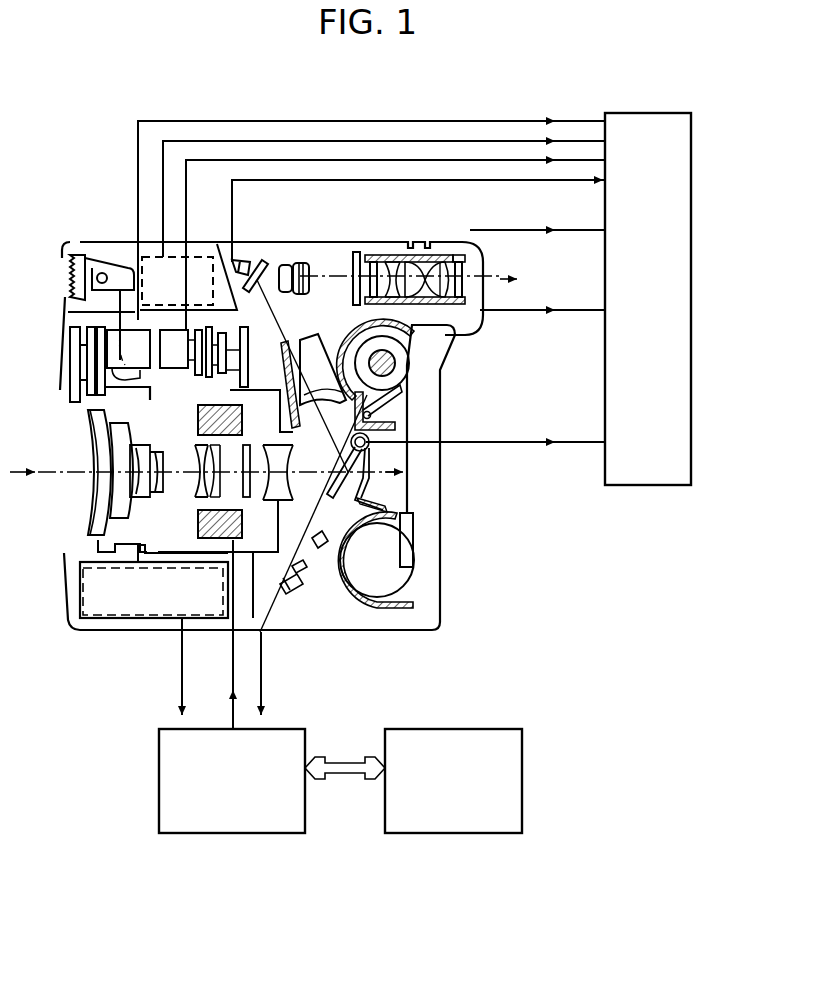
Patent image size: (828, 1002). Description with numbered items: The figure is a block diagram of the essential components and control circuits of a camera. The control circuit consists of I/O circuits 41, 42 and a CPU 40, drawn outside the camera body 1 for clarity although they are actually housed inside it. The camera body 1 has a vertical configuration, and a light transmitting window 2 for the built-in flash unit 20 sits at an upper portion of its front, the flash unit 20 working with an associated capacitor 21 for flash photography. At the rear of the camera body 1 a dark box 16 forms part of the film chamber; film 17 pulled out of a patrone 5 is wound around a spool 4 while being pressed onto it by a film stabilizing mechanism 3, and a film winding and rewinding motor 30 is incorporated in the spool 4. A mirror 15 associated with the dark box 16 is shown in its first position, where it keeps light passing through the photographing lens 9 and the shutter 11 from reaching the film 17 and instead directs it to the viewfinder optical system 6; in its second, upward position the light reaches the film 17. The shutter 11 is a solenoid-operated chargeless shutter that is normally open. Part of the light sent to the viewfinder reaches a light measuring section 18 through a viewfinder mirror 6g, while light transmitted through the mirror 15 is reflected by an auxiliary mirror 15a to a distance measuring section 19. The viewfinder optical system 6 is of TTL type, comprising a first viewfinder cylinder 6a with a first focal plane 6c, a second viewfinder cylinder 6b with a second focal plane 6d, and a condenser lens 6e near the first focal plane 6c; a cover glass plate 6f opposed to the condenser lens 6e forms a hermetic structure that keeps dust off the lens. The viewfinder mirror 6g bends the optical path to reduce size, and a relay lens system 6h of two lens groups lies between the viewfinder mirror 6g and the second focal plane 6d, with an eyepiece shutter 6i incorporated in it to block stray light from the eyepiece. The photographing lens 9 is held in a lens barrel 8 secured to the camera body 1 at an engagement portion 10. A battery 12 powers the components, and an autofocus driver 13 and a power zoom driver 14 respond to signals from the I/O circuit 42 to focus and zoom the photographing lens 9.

The camera body 1 is at (445, 401).
The light transmitting window 2 is at (68, 268).
The film stabilizing mechanism 3 is at (400, 400).
The spool 4 is at (405, 352).
The patrone 5 is at (415, 565).
The viewfinder optical system 6 is at (472, 270).
The first viewfinder cylinder 6a is at (326, 368).
The second viewfinder cylinder 6b is at (453, 262).
The first focal plane 6c is at (362, 422).
The second focal plane 6d is at (393, 262).
The condenser lens 6e is at (300, 425).
The cover glass plate 6f is at (284, 350).
The viewfinder mirror 6g is at (284, 265).
The relay lens system 6h is at (378, 258).
The eyepiece shutter 6i is at (352, 300).
The lens barrel 8 is at (98, 546).
The photographing lens 9 is at (88, 505).
The engagement portion 10 is at (286, 500).
The shutter 11 is at (198, 505).
The battery 12 is at (120, 618).
The autofocus driver 13 is at (110, 322).
The power zoom driver 14 is at (178, 368).
The mirror 15 is at (372, 455).
The auxiliary mirror 15a is at (392, 495).
The dark box 16 is at (388, 504).
The film 17 is at (413, 520).
The light measuring section 18 is at (236, 262).
The distance measuring section 19 is at (290, 598).
The built-in flash unit 20 is at (198, 256).
The capacitor 21 is at (157, 618).
The film winding and rewinding motor 30 is at (405, 370).
The CPU 40 is at (503, 696).
The I/O circuit 41 is at (295, 696).
The I/O circuit 42 is at (640, 486).